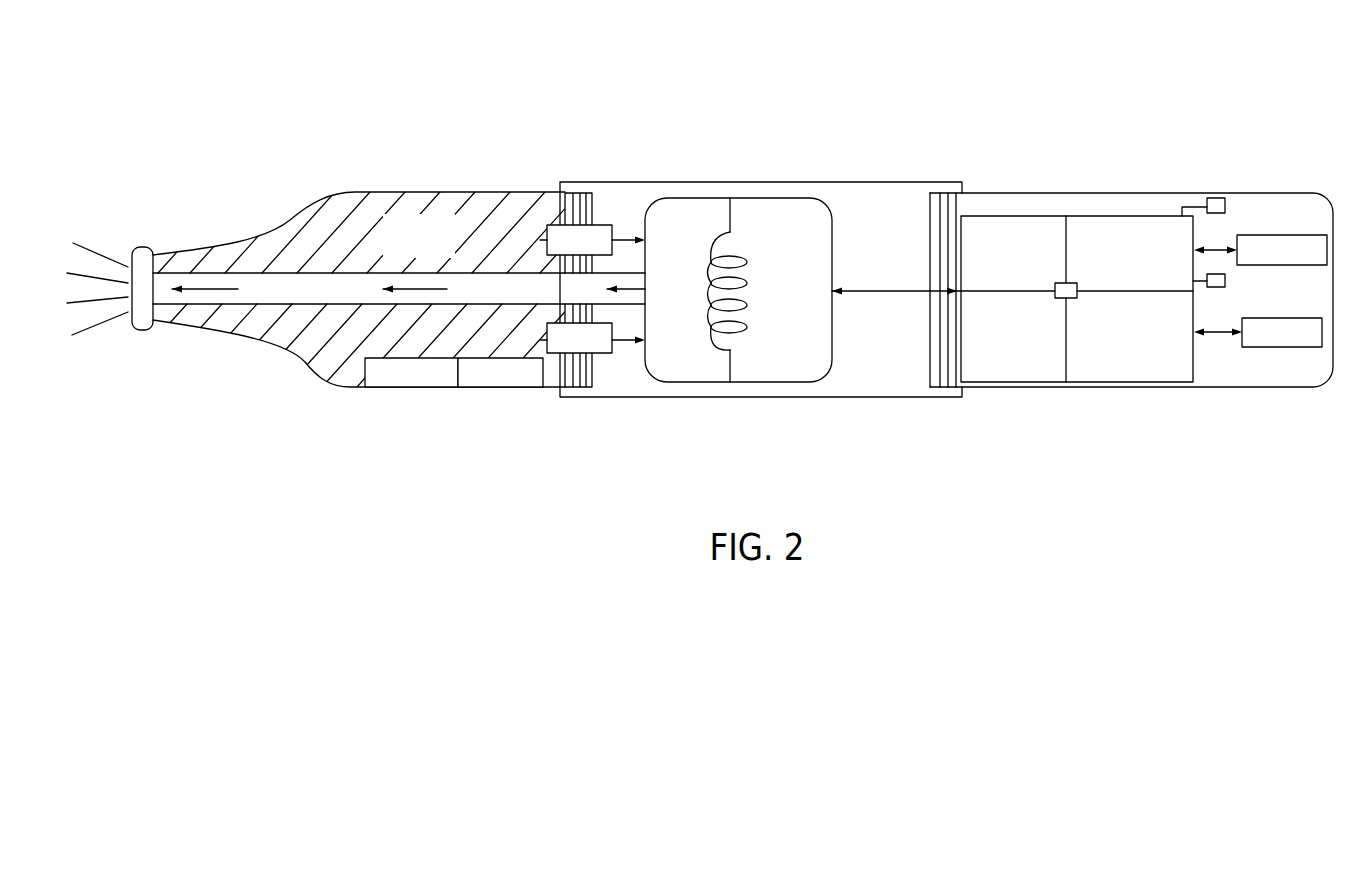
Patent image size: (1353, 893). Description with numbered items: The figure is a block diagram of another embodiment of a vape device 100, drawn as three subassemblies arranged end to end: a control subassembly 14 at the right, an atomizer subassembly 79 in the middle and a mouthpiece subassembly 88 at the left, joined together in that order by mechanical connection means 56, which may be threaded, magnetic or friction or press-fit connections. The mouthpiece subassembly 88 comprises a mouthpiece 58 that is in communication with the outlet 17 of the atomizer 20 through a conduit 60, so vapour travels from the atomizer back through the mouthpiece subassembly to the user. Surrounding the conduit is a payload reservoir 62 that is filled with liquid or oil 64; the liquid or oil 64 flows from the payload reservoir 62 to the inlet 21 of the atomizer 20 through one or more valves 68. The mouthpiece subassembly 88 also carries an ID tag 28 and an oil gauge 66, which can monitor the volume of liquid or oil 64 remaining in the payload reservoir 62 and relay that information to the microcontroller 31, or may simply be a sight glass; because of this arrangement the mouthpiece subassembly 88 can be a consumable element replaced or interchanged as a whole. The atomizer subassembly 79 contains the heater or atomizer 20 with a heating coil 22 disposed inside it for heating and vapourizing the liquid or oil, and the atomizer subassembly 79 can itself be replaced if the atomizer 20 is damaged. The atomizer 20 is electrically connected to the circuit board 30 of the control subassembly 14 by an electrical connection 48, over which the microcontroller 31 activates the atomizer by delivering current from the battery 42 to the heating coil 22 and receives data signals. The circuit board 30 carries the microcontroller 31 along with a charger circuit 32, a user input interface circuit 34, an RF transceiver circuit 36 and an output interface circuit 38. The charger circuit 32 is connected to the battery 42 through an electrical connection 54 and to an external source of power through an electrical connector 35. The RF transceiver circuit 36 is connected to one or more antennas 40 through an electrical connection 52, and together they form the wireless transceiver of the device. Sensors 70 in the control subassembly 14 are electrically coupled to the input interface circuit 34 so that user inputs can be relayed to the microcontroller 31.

The vape device 100 is at (142, 113).
The mouthpiece 58 is at (213, 250).
The conduit 60 is at (267, 284).
The payload reservoir 62 is at (362, 266).
The liquid or oil 64 is at (490, 210).
The mouthpiece subassembly 88 is at (428, 192).
The oil gauge 66 is at (395, 388).
The ID tag 28 is at (522, 388).
The mechanical connection means 56 is at (570, 197).
The atomizer subassembly 79 is at (803, 182).
The valves 68 is at (603, 226).
The inlet 21 is at (638, 237).
The outlet 17 is at (645, 297).
The atomizer 20 is at (795, 383).
The heating coil 22 is at (717, 357).
The electrical connection 48 is at (886, 292).
The control subassembly 14 is at (1183, 194).
The circuit board 30 is at (1097, 214).
The charger circuit 32 is at (1010, 220).
The user input interface circuit 34 is at (1148, 220).
The RF transceiver circuit 36 is at (1018, 376).
The output interface circuit 38 is at (1082, 378).
The microcontroller 31 is at (1063, 284).
The electrical connector 35 is at (1213, 199).
The sensors 70 is at (1225, 283).
The antenna 40 is at (1278, 236).
The electrical connection 52 is at (1212, 250).
The battery 42 is at (1280, 349).
The electrical connection 54 is at (1215, 336).